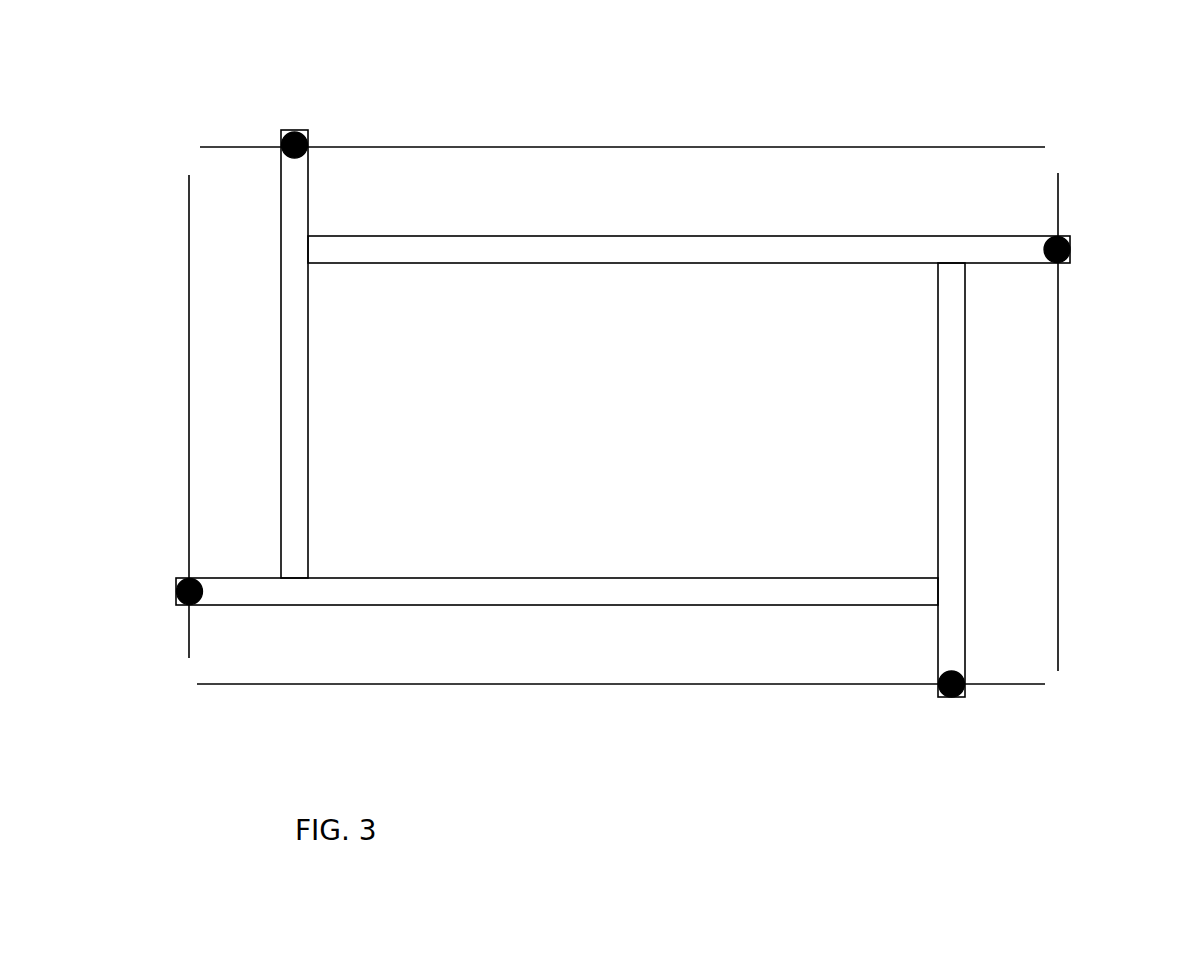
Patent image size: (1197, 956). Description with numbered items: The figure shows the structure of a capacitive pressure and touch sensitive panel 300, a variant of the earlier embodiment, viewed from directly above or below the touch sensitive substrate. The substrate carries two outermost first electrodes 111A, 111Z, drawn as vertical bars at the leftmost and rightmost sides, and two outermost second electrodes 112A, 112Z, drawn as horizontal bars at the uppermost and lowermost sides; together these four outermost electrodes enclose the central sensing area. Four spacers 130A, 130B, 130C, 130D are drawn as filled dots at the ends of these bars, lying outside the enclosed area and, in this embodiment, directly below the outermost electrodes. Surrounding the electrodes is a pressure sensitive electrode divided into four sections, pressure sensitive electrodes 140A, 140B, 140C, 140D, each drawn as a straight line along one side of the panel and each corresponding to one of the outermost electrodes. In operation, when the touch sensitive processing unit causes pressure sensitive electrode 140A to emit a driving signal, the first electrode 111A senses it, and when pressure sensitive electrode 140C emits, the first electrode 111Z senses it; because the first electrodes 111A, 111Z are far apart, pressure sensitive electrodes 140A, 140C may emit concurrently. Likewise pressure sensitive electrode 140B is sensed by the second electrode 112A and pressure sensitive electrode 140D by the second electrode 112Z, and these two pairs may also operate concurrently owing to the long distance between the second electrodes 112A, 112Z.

The capacitive pressure and touch sensitive panel 300 is at (130, 95).
The first electrode 111A is at (308, 183).
The first electrode 111Z is at (966, 656).
The second electrode 112A is at (1017, 263).
The second electrode 112Z is at (228, 607).
The spacer 130A is at (189, 573).
The spacer 130B is at (295, 130).
The spacer 130C is at (1060, 237).
The spacer 130D is at (937, 683).
The pressure sensitive electrode 140A is at (189, 405).
The pressure sensitive electrode 140B is at (597, 146).
The pressure sensitive electrode 140C is at (1058, 447).
The pressure sensitive electrode 140D is at (677, 684).